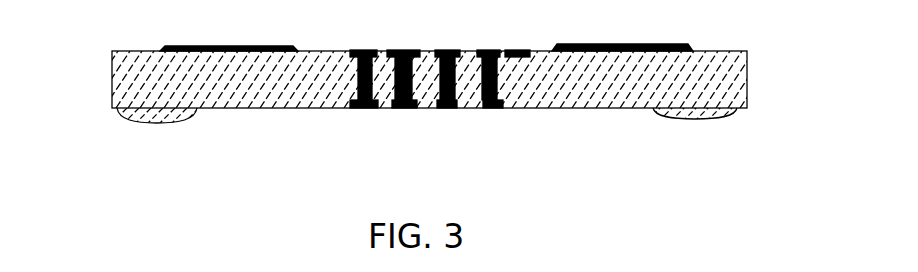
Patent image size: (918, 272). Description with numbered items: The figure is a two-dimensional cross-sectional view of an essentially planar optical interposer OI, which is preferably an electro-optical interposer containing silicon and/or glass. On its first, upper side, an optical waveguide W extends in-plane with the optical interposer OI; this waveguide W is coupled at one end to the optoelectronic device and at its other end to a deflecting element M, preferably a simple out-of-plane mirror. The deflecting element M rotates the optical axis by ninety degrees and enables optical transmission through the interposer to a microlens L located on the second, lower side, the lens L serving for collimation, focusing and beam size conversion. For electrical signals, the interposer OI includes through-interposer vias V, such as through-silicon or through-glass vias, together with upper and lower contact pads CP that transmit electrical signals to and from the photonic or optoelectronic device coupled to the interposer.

The deflecting element M is at (160, 50).
The optical waveguide W is at (203, 47).
The microlens L is at (147, 113).
The contact pads CP is at (367, 53).
The through-interposer vias V is at (482, 90).
The optical interposer OI is at (617, 90).